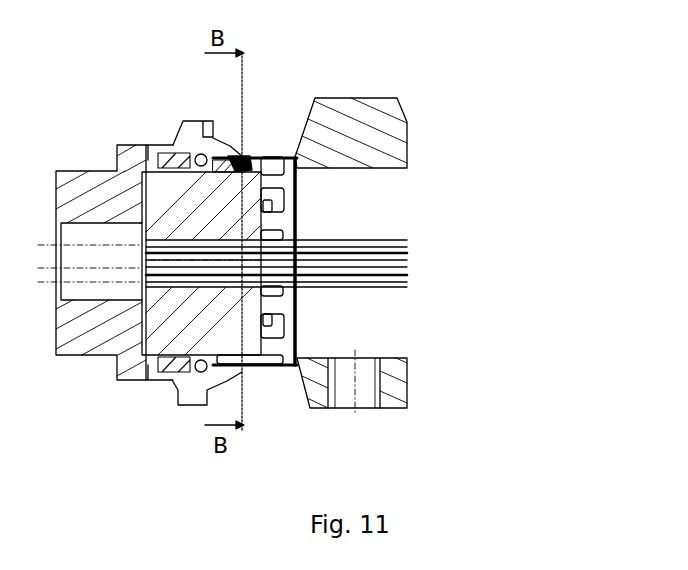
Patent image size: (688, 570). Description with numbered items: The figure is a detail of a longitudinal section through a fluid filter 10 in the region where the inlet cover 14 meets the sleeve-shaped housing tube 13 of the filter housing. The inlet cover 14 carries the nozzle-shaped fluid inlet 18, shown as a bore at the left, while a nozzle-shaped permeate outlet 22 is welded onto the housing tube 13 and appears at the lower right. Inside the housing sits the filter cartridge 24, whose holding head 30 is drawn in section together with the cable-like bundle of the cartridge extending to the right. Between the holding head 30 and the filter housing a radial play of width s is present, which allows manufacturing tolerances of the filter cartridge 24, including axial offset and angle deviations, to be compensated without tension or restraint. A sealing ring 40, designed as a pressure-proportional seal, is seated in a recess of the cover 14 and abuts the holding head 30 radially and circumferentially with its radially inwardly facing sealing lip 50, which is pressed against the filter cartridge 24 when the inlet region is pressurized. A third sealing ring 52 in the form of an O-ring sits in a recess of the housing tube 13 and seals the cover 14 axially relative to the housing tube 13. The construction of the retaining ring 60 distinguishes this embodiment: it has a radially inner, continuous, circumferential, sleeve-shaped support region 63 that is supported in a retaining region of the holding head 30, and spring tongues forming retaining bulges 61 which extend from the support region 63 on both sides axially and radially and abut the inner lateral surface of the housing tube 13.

The fluid filter 10 is at (432, 99).
The housing tube 13 is at (363, 110).
The inlet cover 14 is at (83, 171).
The fluid inlet 18 is at (70, 259).
The permeate outlet 22 is at (355, 398).
The filter cartridge 24 is at (400, 239).
The holding head 30 is at (146, 169).
The sealing ring 40 is at (183, 376).
The sealing lip 50 is at (170, 343).
The third sealing ring 52 is at (197, 143).
The retaining ring 60 is at (238, 152).
The retaining bulge 61 is at (272, 157).
The support region 63 is at (255, 153).
The width of radial play s is at (163, 182).